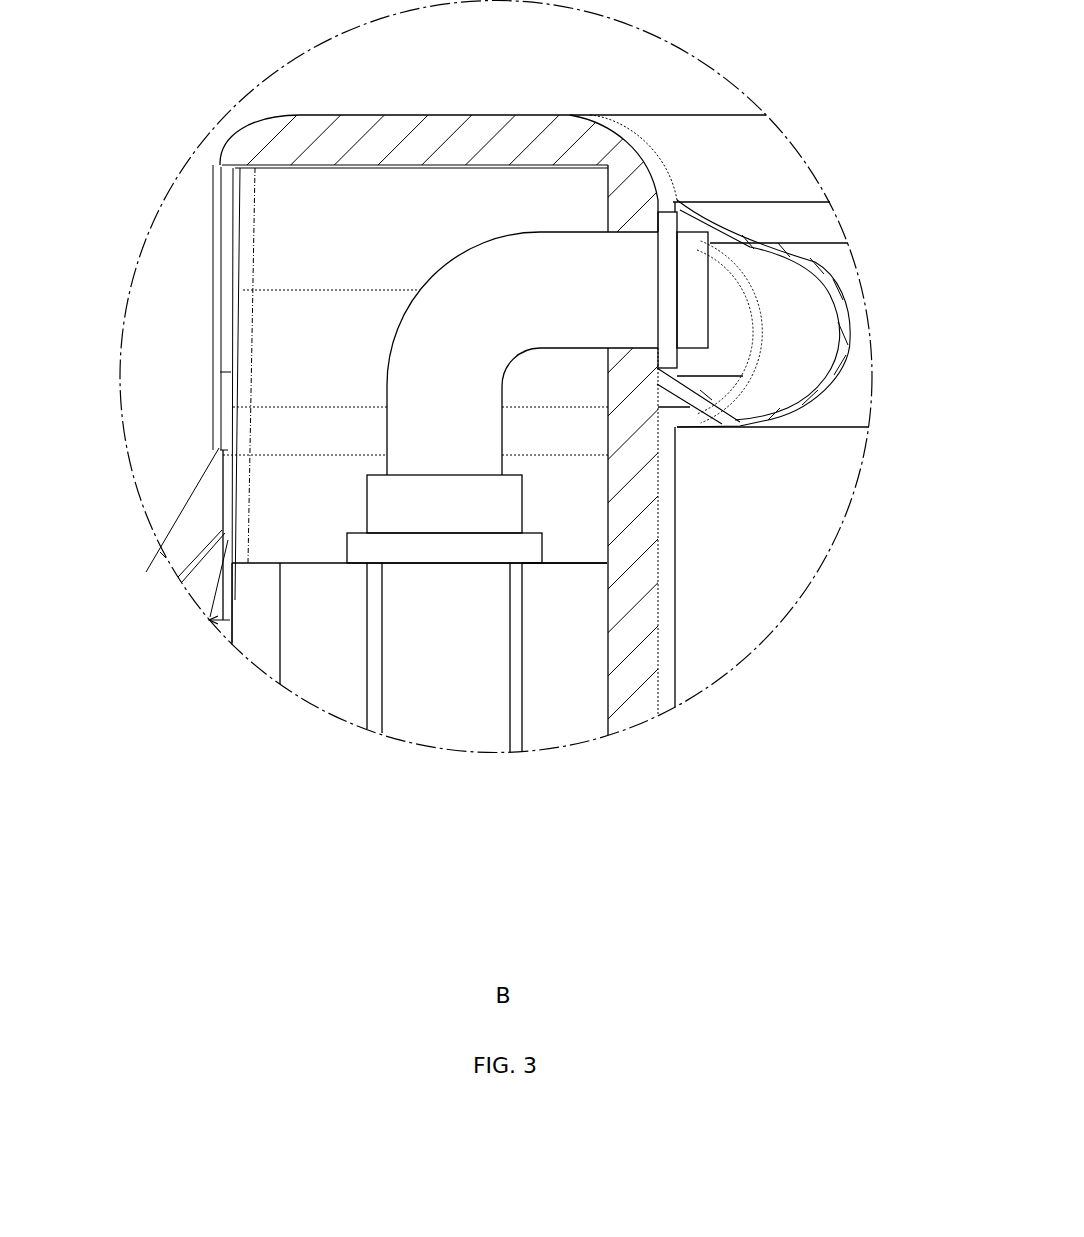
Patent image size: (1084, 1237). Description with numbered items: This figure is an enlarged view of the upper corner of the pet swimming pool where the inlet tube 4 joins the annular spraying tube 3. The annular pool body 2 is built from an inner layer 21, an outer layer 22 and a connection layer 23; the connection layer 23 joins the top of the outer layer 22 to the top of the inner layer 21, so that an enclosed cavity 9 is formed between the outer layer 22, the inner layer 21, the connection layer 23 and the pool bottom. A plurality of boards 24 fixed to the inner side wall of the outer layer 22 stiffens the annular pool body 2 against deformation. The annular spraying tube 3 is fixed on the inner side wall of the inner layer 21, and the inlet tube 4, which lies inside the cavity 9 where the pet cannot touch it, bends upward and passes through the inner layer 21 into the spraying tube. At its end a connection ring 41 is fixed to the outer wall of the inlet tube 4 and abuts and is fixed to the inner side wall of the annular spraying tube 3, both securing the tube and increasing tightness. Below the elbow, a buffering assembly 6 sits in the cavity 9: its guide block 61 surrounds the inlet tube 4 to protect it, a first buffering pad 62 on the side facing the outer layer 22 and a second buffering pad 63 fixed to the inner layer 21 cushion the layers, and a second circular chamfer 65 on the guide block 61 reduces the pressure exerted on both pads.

The annular pool body 2 is at (137, 737).
The annular spraying tube 3 is at (850, 332).
The inlet tube 4 is at (540, 302).
The buffering assembly 6 is at (419, 703).
The cavity 9 is at (328, 240).
The inner layer 21 is at (628, 636).
The outer layer 22 is at (195, 535).
The connection layer 23 is at (283, 680).
The board 24 is at (260, 597).
The connection ring 41 is at (673, 273).
The guide block 61 is at (445, 690).
The first buffering pad 62 is at (333, 690).
The second buffering pad 63 is at (563, 718).
The second circular chamfer 65 is at (515, 690).